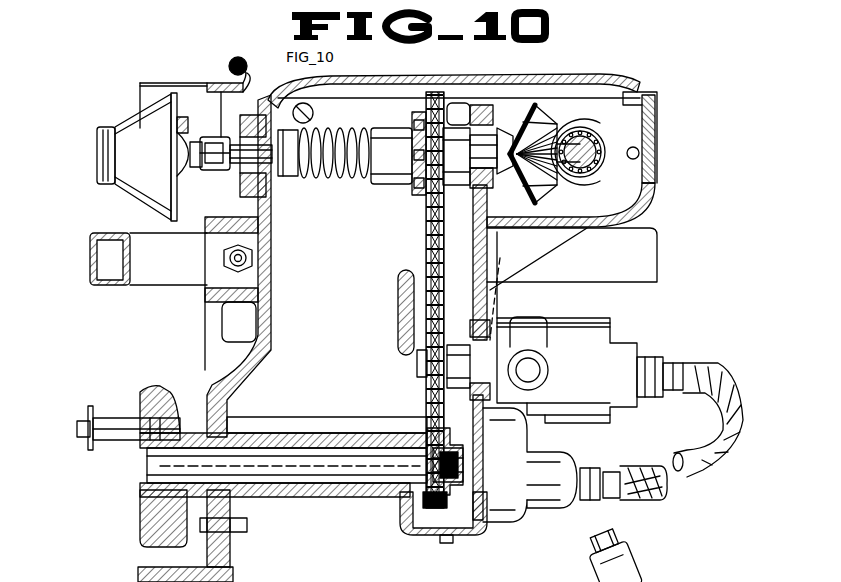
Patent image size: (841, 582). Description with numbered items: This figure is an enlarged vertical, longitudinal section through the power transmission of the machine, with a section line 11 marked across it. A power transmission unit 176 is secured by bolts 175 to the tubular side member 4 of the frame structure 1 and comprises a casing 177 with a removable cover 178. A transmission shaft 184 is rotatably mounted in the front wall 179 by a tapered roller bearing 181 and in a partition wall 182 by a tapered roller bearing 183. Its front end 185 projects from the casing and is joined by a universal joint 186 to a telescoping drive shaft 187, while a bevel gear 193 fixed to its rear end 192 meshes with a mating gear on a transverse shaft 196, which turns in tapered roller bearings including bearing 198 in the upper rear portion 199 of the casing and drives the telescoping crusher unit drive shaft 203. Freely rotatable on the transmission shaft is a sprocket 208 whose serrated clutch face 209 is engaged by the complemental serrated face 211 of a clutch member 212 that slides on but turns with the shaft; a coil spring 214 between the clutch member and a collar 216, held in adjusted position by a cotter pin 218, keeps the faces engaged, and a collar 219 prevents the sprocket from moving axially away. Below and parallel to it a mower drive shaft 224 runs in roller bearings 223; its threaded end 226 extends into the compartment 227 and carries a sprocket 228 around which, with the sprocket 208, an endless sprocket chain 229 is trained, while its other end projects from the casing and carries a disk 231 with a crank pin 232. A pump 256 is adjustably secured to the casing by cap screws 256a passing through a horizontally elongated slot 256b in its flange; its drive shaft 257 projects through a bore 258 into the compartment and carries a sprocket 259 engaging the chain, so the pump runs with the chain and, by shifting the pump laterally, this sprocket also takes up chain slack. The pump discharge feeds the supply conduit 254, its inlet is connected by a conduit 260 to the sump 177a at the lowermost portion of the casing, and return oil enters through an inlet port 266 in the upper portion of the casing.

The frame structure 1 is at (97, 260).
The tubular side member 4 is at (613, 277).
The section line 11- 11 is at (35, 128).
The bolts 175 is at (225, 259).
The power transmission unit 176 is at (212, 357).
The casing 177 is at (213, 375).
The sump 177a is at (423, 517).
The removable cover 178 is at (486, 128).
The front wall 179 is at (272, 208).
The tapered roller bearing 181 is at (243, 186).
The partition wall 182 is at (481, 198).
The tapered roller bearing 183 is at (477, 174).
The transmission shaft 184 is at (338, 140).
The front end 185 is at (193, 142).
The universal joint 186 is at (182, 116).
The telescoping drive shaft 187 is at (96, 150).
The rear end 192 is at (513, 146).
The bevel gear 193 is at (543, 114).
The transverse shaft 196 is at (588, 176).
The tapered roller bearing 198 is at (595, 146).
The upper rear portion 199 is at (640, 185).
The telescoping crusher unit drive shaft 203 is at (634, 557).
The sprocket 208 is at (421, 94).
The serrated clutch face 209 is at (399, 182).
The complemental serrated face 211 is at (418, 163).
The clutch member 212 is at (401, 223).
The coil spring 214 is at (333, 178).
The collar 216 is at (311, 115).
The cotter pin 218 is at (293, 182).
The collar 219 is at (503, 174).
The roller bearings 223 is at (270, 497).
The mower drive shaft 224 is at (173, 465).
The threaded end 226 is at (464, 459).
The compartment 227 is at (370, 315).
The sprocket 228 is at (462, 446).
The endless sprocket chain 229 is at (427, 391).
The disk 231 is at (147, 524).
The crank pin 232 is at (110, 418).
The supply conduit 254 is at (710, 362).
The pump 256 is at (613, 381).
The cap screws 256a is at (500, 333).
The horizontally elongated slot 256b is at (518, 288).
The drive shaft 257 is at (476, 346).
The bore 258 is at (459, 390).
The sprocket 259 is at (417, 365).
The conduit 260 is at (668, 499).
The inlet port 266 is at (308, 103).